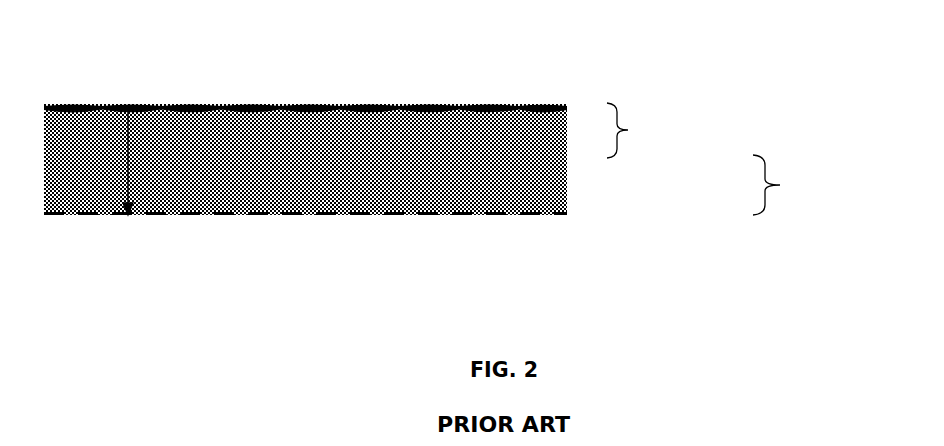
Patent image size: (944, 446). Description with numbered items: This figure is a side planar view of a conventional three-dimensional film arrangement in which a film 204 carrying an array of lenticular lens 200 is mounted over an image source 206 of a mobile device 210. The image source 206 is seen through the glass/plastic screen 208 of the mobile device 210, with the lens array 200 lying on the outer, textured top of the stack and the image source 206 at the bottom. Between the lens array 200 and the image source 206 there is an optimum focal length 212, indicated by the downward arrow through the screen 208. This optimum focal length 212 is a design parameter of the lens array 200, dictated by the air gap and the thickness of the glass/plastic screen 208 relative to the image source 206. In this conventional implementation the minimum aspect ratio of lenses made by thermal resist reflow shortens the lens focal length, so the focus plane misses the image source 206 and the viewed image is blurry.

The lenticular lens array 200 is at (485, 108).
The film 204 is at (655, 130).
The image source 206 is at (552, 213).
The glass/plastic screen 208 is at (338, 194).
The mobile device 210 is at (801, 185).
The optimum focal length 212 is at (121, 183).